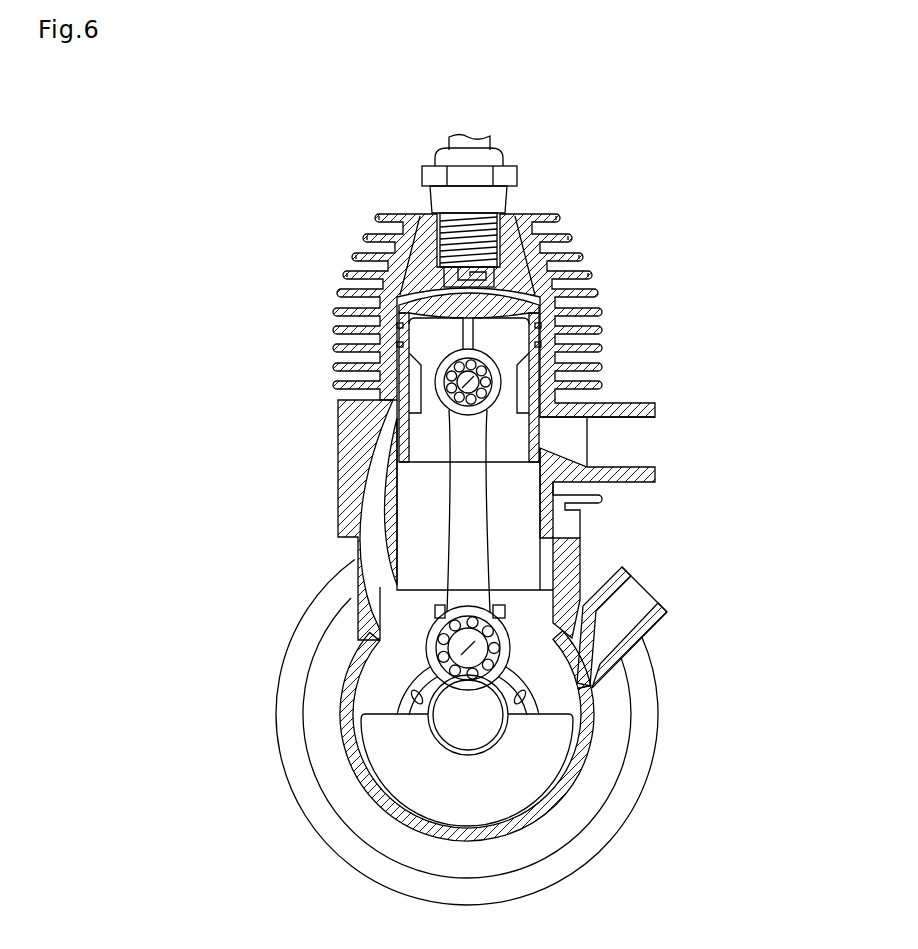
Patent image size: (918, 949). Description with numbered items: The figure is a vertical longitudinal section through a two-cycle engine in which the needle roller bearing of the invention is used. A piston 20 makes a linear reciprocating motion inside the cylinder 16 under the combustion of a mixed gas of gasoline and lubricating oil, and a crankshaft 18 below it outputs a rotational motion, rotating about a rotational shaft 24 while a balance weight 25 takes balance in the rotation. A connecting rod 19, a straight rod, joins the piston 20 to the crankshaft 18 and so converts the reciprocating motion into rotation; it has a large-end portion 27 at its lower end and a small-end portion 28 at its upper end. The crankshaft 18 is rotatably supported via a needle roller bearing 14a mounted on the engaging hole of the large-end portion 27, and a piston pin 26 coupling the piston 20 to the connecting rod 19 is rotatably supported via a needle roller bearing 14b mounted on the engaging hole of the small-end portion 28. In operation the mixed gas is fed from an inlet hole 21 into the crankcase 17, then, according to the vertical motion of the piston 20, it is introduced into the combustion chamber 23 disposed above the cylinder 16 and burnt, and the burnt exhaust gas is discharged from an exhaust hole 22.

The needle roller bearing 14a is at (518, 642).
The needle roller bearing 14b is at (503, 366).
The cylinder 16 is at (413, 482).
The crankcase 17 is at (560, 700).
The crankshaft 18 is at (460, 645).
The connecting rod 19 is at (473, 540).
The piston 20 is at (548, 335).
The inlet hole 21 is at (633, 607).
The exhaust hole 22 is at (647, 445).
The combustion chamber 23 is at (368, 307).
The rotational shaft 24 is at (448, 712).
The balance weight 25 is at (380, 752).
The piston pin 26 is at (368, 400).
The large-end portion 27 is at (360, 603).
The small-end portion 28 is at (380, 368).